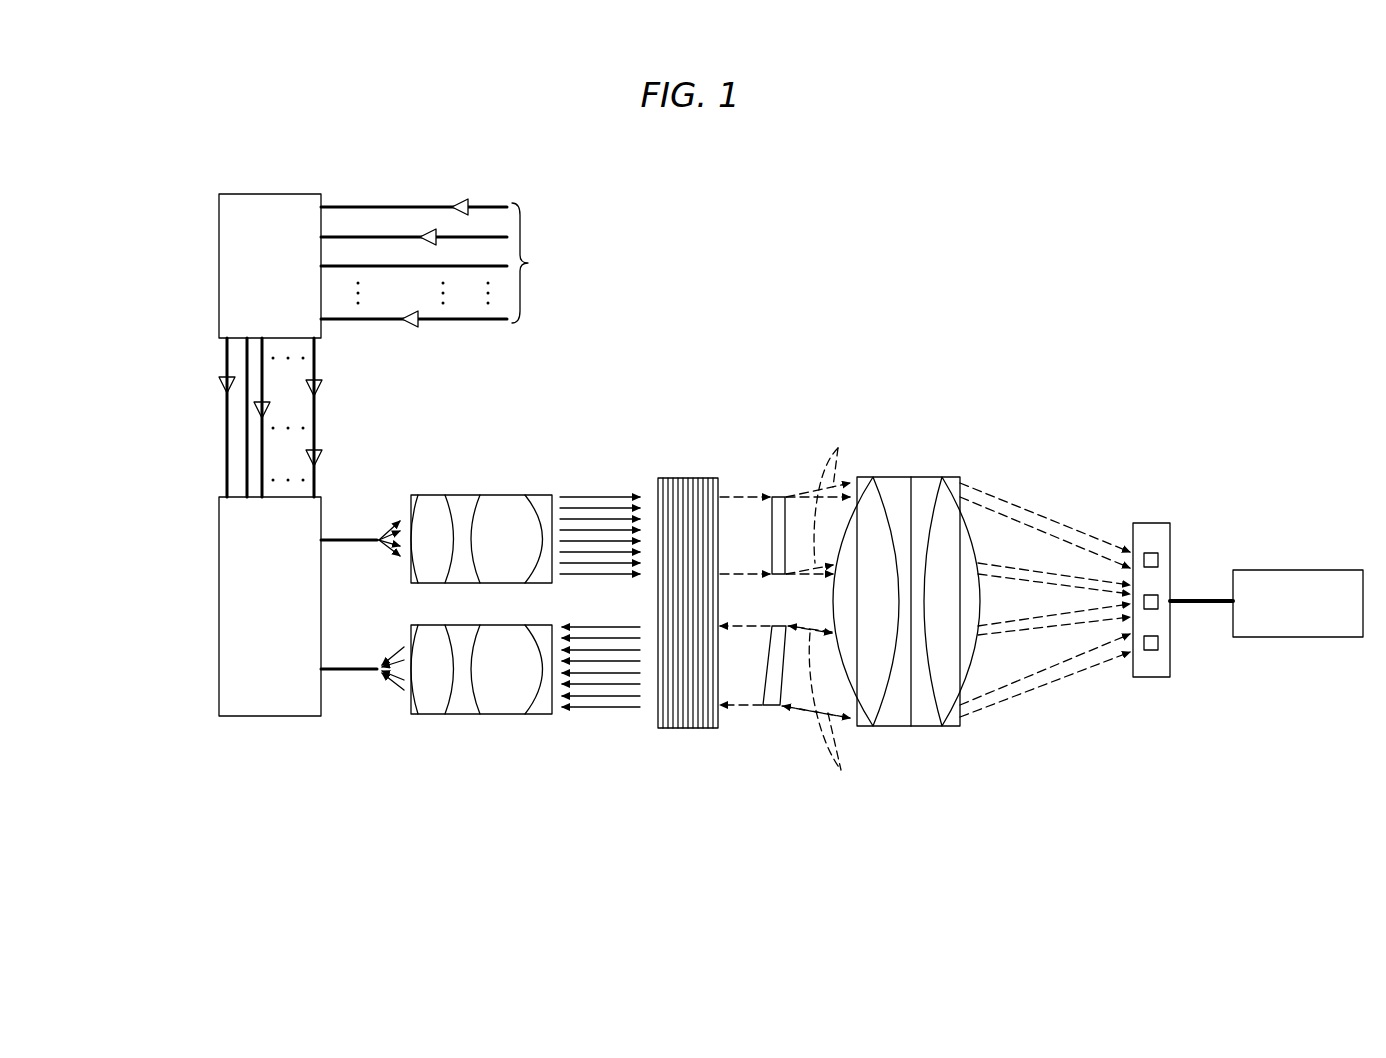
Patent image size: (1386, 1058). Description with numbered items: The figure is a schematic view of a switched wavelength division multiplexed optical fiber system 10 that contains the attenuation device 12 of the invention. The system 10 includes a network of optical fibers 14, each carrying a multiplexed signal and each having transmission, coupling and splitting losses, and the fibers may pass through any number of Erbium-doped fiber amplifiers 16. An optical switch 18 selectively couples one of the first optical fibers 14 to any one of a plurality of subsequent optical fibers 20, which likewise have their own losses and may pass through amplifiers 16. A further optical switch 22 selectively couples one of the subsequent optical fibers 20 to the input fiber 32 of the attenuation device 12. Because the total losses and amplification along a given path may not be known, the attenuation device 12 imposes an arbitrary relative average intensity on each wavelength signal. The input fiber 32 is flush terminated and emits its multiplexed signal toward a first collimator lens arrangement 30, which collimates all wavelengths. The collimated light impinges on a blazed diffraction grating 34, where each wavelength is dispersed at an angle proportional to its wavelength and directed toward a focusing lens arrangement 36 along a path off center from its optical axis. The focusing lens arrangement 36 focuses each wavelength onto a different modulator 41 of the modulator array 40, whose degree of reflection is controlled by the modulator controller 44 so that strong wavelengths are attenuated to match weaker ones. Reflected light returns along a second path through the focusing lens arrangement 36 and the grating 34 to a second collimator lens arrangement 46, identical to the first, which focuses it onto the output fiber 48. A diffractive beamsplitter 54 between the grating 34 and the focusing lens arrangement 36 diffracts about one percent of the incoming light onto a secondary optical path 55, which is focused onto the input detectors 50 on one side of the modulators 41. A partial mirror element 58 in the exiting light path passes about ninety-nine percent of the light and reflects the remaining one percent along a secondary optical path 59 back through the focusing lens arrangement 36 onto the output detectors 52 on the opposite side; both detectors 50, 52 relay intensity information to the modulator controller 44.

The switched wavelength division multiplexed optical fiber system 10 is at (583, 190).
The attenuation device 12 is at (760, 380).
The optical fibers 14 is at (447, 263).
The Erbium-doped fiber amplifiers 16 is at (460, 207).
The optical switch 18 is at (254, 194).
The subsequent optical fibers 20 is at (248, 446).
The optical switch 22 is at (219, 597).
The first collimator lens arrangement 30 is at (497, 495).
The input fiber 32 is at (350, 534).
The blazed diffraction grating 34 is at (685, 478).
The focusing lens arrangement 36 is at (900, 477).
The modulator array 40 is at (1146, 523).
The modulators 41 is at (1158, 602).
The modulator controller 44 is at (1290, 570).
The second collimator lens arrangement 46 is at (495, 625).
The output fiber 48 is at (350, 677).
The input detectors 50 is at (1158, 560).
The output detectors 52 is at (1152, 650).
The diffractive beamsplitter 54 is at (780, 495).
The secondary optical path 55 is at (836, 490).
The partial mirror element 58 is at (764, 704).
The secondary optical path 59 is at (831, 718).